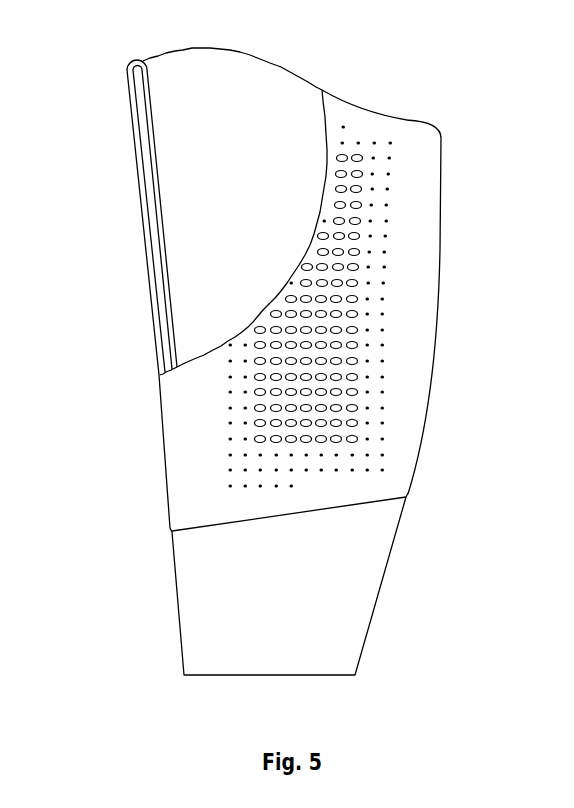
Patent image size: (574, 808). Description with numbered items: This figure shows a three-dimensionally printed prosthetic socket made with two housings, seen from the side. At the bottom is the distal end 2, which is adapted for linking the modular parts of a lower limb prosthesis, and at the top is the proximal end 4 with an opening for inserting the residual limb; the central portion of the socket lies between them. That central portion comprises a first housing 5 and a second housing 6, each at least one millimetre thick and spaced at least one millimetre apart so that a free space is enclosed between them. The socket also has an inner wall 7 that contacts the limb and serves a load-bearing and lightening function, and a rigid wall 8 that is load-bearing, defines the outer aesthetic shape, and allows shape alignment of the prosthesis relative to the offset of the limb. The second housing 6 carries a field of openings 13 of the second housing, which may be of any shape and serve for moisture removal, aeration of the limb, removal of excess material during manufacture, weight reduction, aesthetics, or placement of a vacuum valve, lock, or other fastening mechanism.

The distal end 2 is at (381, 601).
The proximal end 4 is at (330, 80).
The first housing 5 is at (143, 105).
The second housing 6 is at (150, 282).
The inner wall 7 is at (178, 197).
The rigid wall 8 is at (413, 393).
The opening of the second housing 13 is at (377, 312).